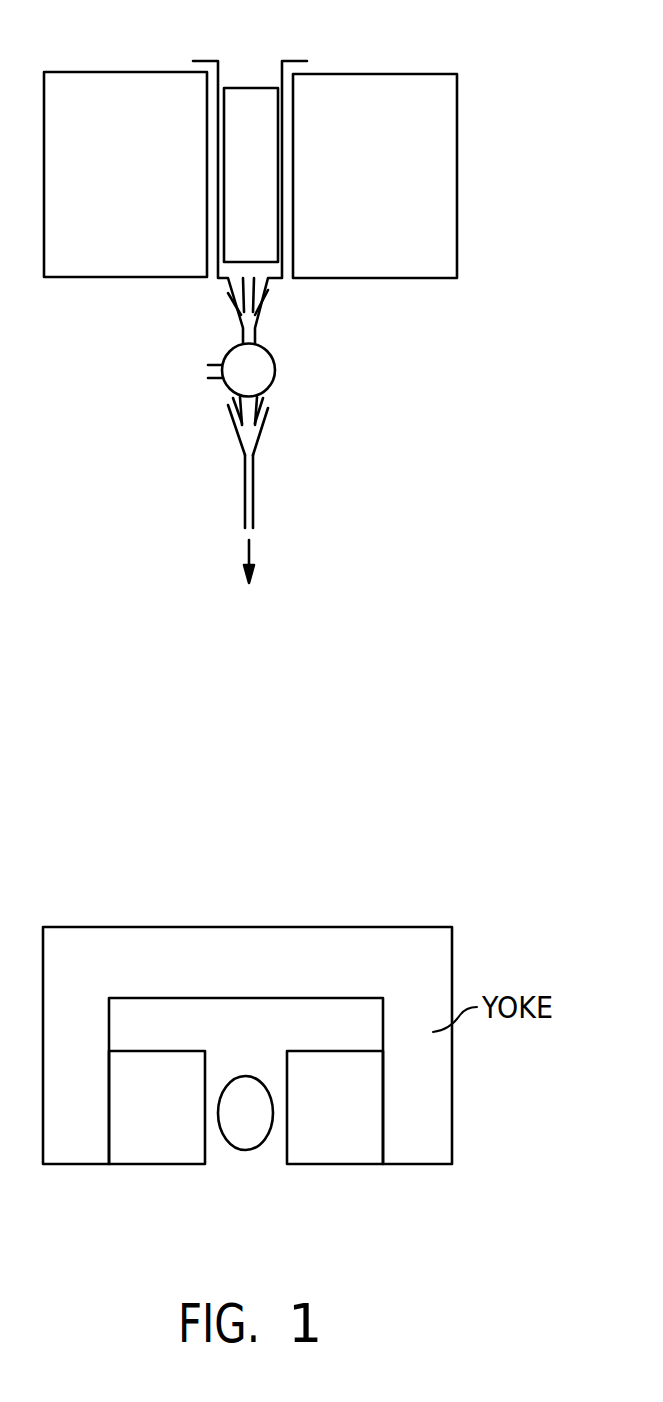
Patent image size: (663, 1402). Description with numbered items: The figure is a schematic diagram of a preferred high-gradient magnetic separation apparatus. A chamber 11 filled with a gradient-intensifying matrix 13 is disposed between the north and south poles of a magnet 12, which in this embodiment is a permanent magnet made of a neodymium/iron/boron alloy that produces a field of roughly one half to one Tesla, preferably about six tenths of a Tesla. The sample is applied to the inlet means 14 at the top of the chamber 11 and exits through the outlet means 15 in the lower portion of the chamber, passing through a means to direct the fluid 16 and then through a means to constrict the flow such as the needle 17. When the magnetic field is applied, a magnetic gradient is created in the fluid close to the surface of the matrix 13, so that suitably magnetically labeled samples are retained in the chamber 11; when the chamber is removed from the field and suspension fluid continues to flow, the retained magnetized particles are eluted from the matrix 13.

The chamber 11 is at (285, 128).
The magnet 12 is at (432, 140).
The gradient-intensifying matrix 13 is at (262, 228).
The inlet means 14 is at (257, 75).
The outlet means 15 is at (251, 587).
The means to direct the fluid 16 is at (253, 370).
The needle 17 is at (250, 493).